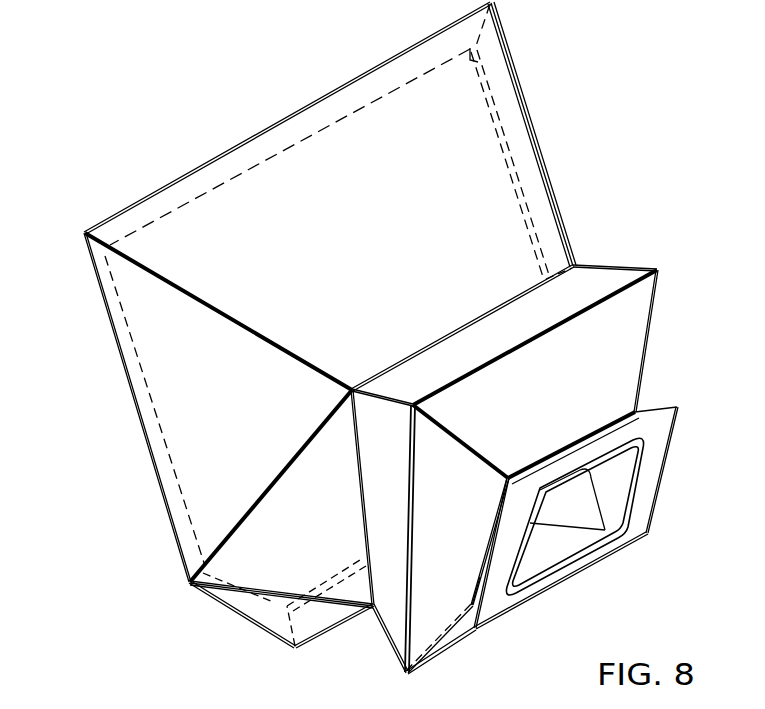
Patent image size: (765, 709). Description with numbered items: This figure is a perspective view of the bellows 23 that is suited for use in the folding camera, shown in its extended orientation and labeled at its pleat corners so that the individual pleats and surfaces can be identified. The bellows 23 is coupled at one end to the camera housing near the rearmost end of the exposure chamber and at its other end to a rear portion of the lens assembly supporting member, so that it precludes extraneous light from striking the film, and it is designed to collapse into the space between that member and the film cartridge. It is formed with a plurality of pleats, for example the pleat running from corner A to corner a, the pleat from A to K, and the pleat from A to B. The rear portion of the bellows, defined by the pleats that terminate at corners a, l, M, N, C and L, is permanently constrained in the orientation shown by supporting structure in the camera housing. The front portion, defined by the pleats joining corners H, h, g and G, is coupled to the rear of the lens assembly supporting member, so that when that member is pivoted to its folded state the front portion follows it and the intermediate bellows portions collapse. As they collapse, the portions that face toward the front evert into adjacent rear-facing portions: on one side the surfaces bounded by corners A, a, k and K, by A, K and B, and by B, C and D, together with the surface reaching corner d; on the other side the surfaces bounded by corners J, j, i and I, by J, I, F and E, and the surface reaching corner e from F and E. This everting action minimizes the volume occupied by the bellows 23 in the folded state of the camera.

The bellows 23 is at (240, 170).
The bellows pleat corner a is at (500, 6).
The bellows pleat corner l is at (480, 62).
The bellows pleat corner k is at (578, 264).
The bellows pleat corner j is at (660, 270).
The bellows pleat corner i is at (634, 410).
The bellows pleat corner h is at (678, 407).
The bellows pleat corner g is at (650, 532).
The bellows pleat corner e is at (620, 556).
The bellows pleat corner d is at (605, 520).
The bellows pleat corner A is at (84, 232).
The bellows pleat corner L is at (106, 268).
The bellows pleat corner K is at (352, 388).
The bellows pleat corner J is at (412, 404).
The bellows pleat corner I is at (508, 476).
The bellows pleat corner H is at (498, 496).
The bellows pleat corner F is at (470, 604).
The bellows pleat corner G is at (476, 632).
The bellows pleat corner E is at (408, 674).
The bellows pleat corner D is at (372, 608).
The bellows pleat corner C is at (292, 650).
The bellows pleat corner N is at (262, 604).
The bellows pleat corner B is at (186, 583).
The bellows pleat corner M is at (198, 556).